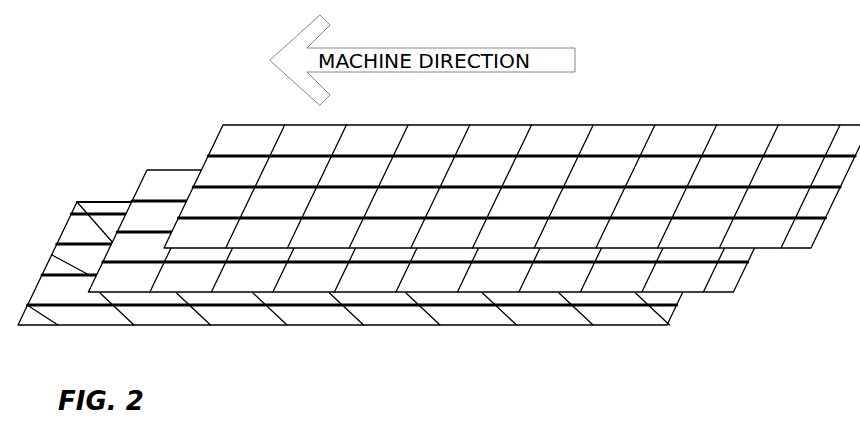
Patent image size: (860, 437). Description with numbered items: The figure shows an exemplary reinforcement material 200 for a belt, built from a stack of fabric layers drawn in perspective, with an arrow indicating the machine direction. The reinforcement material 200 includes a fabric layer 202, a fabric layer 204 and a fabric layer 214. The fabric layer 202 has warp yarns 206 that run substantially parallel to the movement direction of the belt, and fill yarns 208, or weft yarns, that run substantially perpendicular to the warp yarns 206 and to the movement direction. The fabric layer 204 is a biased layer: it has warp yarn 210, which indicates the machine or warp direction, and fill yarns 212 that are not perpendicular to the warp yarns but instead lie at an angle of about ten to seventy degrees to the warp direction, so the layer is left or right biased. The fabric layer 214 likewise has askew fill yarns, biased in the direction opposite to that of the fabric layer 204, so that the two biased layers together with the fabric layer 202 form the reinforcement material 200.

The reinforcement material 200 is at (439, 248).
The fabric layer 202 is at (465, 292).
The fabric layer 204 is at (394, 316).
The warp yarns 206 is at (543, 263).
The fill yarns 208 is at (650, 257).
The warp yarn 210 is at (158, 305).
The fill yarns 212 is at (280, 325).
The fabric layer 214 is at (633, 125).